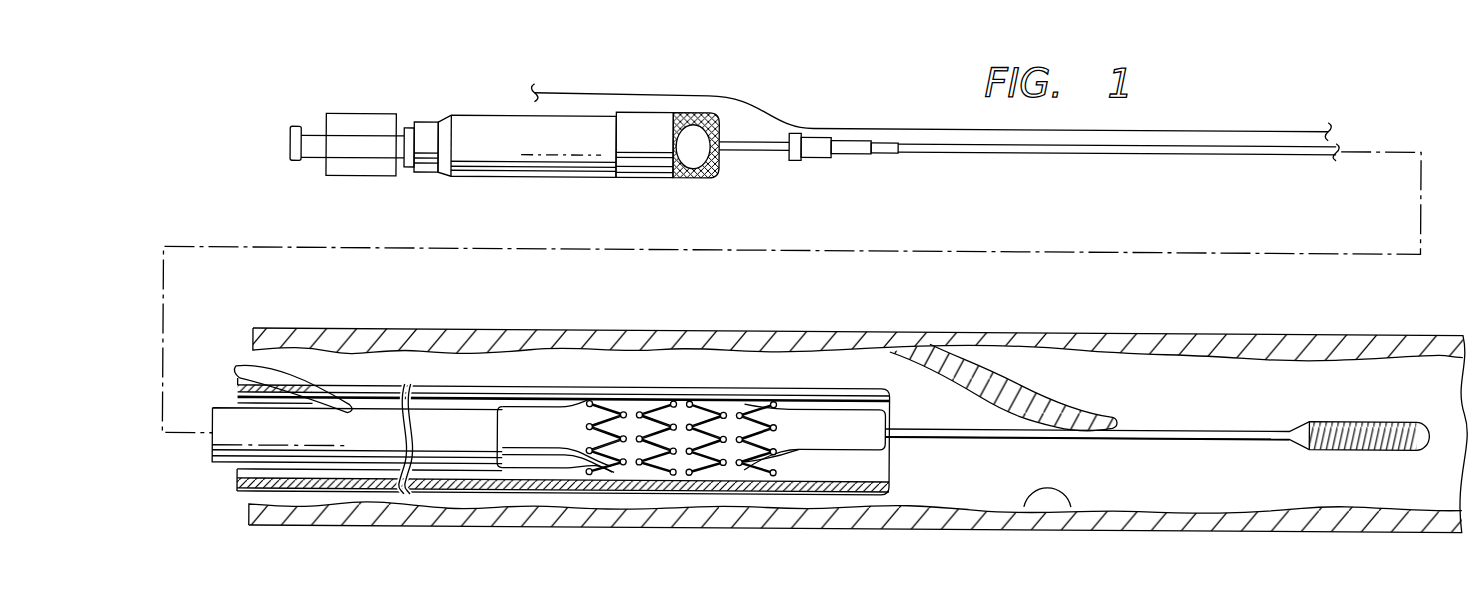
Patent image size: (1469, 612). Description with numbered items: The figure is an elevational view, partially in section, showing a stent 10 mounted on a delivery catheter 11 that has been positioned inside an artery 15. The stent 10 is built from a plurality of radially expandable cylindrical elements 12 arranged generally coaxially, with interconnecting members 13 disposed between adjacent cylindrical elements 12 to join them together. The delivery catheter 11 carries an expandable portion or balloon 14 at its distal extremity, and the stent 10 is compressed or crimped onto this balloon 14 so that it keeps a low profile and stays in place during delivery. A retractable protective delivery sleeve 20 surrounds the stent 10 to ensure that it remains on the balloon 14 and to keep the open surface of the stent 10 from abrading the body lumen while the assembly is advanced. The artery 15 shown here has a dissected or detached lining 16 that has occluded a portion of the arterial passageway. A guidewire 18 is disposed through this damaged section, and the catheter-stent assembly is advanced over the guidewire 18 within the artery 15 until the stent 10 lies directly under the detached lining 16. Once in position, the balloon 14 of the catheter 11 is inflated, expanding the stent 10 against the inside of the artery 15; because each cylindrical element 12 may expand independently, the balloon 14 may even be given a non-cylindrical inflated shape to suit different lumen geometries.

The stent 10 is at (563, 432).
The delivery catheter 11 is at (1052, 151).
The radially expandable cylindrical element 12 is at (681, 381).
The interconnecting member 13 is at (627, 417).
The balloon 14 is at (522, 442).
The artery 15 is at (1025, 502).
The dissected or detached lining 16 is at (962, 402).
The guidewire 18 is at (1228, 424).
The retractable protective delivery sleeve 20 is at (565, 488).